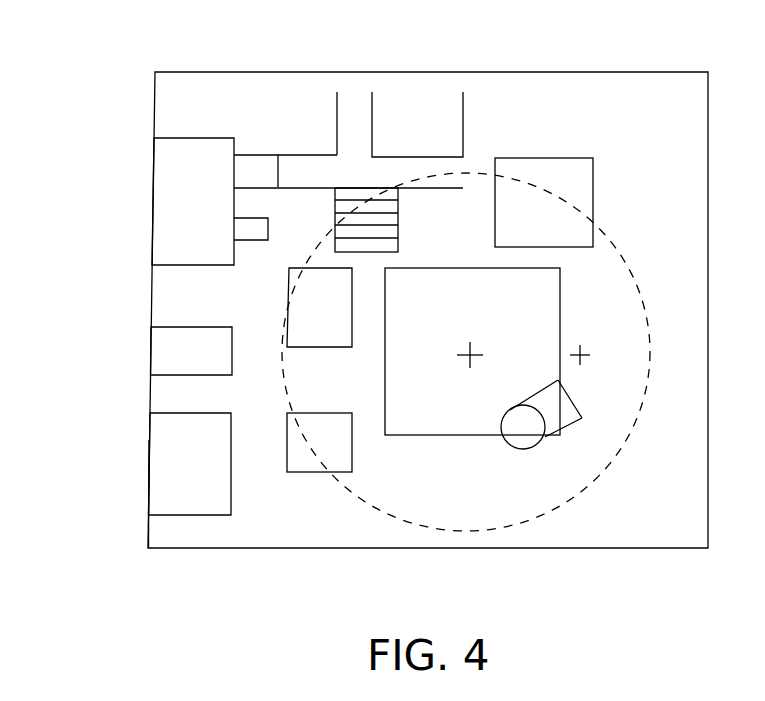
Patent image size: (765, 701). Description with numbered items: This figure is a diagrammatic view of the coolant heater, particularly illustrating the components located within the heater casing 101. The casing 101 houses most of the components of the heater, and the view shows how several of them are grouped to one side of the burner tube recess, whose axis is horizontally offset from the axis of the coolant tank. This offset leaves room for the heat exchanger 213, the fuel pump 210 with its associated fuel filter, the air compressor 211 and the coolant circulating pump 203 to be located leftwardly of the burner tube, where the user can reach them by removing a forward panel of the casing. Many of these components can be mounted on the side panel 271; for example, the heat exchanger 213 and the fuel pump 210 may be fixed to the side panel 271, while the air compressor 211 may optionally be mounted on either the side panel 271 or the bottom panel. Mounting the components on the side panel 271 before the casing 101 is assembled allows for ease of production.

The heater casing 101 is at (650, 548).
The side panel 271 is at (149, 500).
The heat exchanger 213 is at (202, 137).
The fuel pump 210 is at (208, 327).
The air compressor 211 is at (205, 413).
The coolant circulating pump 203 is at (322, 348).